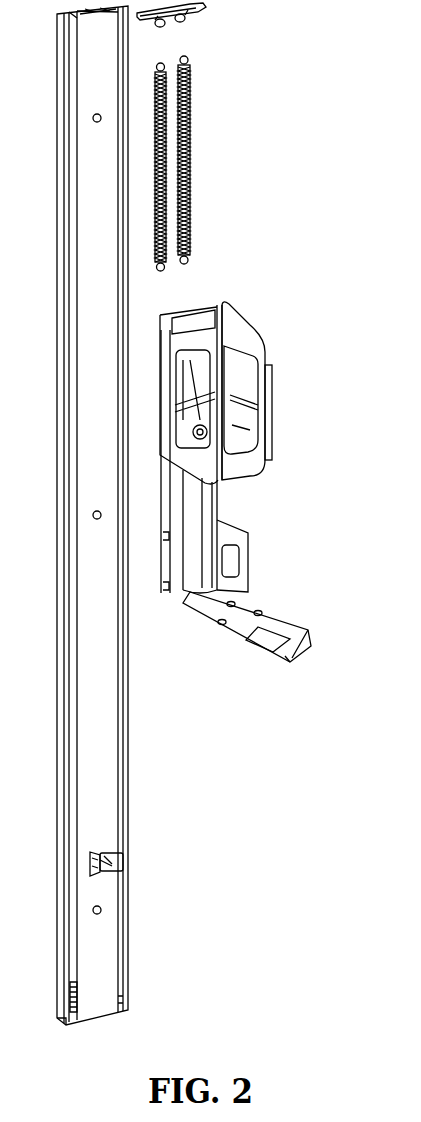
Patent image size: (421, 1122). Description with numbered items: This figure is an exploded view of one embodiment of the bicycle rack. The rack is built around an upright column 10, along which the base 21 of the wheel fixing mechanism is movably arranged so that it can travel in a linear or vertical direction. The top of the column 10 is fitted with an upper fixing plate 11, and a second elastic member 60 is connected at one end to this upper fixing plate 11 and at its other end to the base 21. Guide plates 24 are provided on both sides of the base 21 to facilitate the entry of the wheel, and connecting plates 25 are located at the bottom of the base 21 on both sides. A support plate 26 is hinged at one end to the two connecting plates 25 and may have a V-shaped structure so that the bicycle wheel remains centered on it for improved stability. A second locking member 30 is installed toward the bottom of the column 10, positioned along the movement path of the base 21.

The column 10 is at (108, 705).
The upper fixing plate 11 is at (190, 10).
The second elastic member 60 is at (192, 155).
The base 21 is at (213, 503).
The guide plates 24 is at (258, 336).
The connecting plates 25 is at (240, 548).
The support plate 26 is at (287, 625).
The second locking member 30 is at (120, 866).